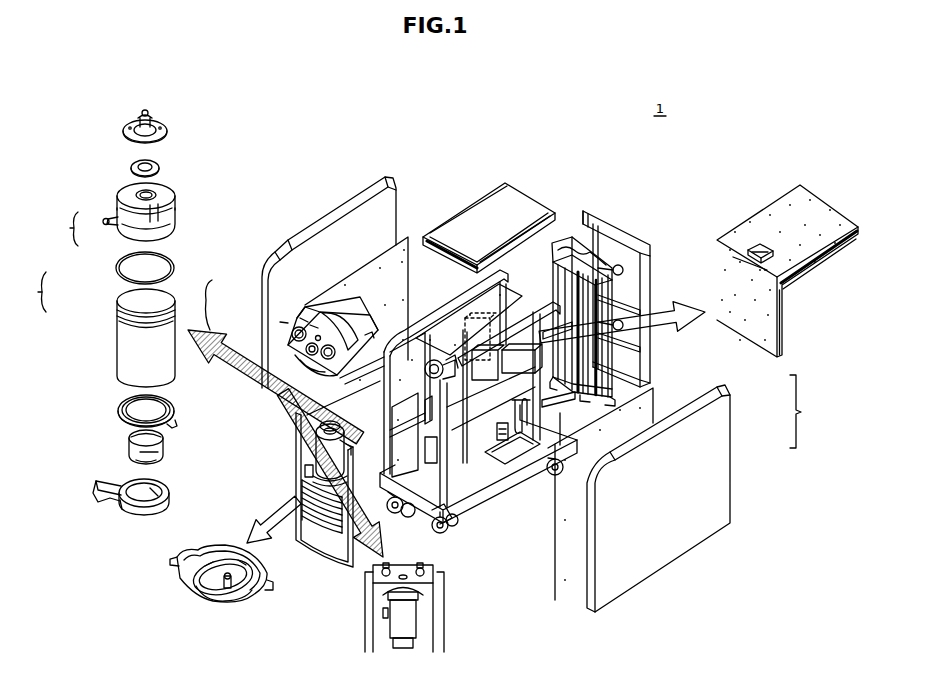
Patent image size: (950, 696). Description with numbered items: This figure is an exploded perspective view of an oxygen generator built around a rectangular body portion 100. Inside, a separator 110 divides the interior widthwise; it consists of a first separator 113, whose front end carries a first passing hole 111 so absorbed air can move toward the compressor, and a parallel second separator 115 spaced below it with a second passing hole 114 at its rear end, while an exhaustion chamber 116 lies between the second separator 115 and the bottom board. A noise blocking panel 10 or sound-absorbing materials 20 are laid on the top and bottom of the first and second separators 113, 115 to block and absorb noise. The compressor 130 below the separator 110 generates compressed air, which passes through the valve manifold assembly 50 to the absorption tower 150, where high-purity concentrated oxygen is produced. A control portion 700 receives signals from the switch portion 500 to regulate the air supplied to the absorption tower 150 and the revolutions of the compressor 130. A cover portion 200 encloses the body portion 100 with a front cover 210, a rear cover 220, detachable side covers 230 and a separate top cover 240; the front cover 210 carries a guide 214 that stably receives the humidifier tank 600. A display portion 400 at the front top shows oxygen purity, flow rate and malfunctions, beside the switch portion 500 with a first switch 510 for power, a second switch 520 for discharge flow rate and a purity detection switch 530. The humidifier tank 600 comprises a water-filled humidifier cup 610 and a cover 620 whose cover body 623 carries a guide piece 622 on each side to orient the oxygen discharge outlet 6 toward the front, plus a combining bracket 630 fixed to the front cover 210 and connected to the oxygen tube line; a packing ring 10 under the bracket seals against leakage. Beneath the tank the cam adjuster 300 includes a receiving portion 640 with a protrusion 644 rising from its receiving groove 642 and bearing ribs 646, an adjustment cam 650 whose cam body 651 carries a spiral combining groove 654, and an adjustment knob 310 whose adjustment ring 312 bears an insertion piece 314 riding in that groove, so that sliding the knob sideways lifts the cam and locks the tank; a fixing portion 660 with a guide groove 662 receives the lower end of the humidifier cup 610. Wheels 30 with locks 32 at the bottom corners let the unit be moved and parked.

The oxygen discharge outlet 6 is at (106, 224).
The noise blocking panel 10 is at (128, 169).
The sound-absorbing materials 20 is at (812, 264).
The wheel 30 is at (450, 534).
The lock 32 is at (428, 578).
The valve manifold assembly 50 is at (509, 344).
The body portion 100 is at (478, 403).
The separator 110 is at (478, 500).
The first passing hole 111 is at (754, 247).
The first separator 113 is at (784, 355).
The second passing hole 114 is at (522, 462).
The second separator 115 is at (516, 440).
The exhaustion chamber 116 is at (422, 520).
The compressor 130 is at (455, 526).
The absorption tower 150 is at (576, 238).
The cover portion 200 is at (807, 411).
The front cover 210 is at (318, 575).
The guide 214 is at (432, 590).
The rear cover 220 is at (662, 356).
The side covers 230 is at (320, 211).
The top cover 240 is at (526, 195).
The cam adjuster 300 is at (180, 480).
The adjustment knob 310 is at (96, 498).
The adjustment ring 312 is at (130, 508).
The insertion piece 314 is at (160, 500).
The display portion 400 is at (306, 306).
The switch portion 500 is at (249, 303).
The first switch 510 is at (280, 324).
The second switch 520 is at (300, 318).
The purity detection switch 530 is at (310, 325).
The humidifier tank 600 is at (28, 292).
The humidifier cup 610 is at (113, 341).
The cover 620 is at (109, 217).
The guide piece 622 is at (135, 234).
The cap top 623 is at (118, 209).
The combining bracket 630 is at (120, 131).
The receiving portion 640 is at (205, 542).
The receiving groove 642 is at (252, 598).
The protrusion 644 is at (205, 590).
The ribs 646 is at (226, 590).
The adjustment cam 650 is at (126, 452).
The cam body 651 is at (131, 438).
The spiral combining groove 654 is at (138, 462).
The fixing portion 660 is at (115, 417).
The guide groove 662 is at (128, 400).
The control portion 700 is at (472, 324).